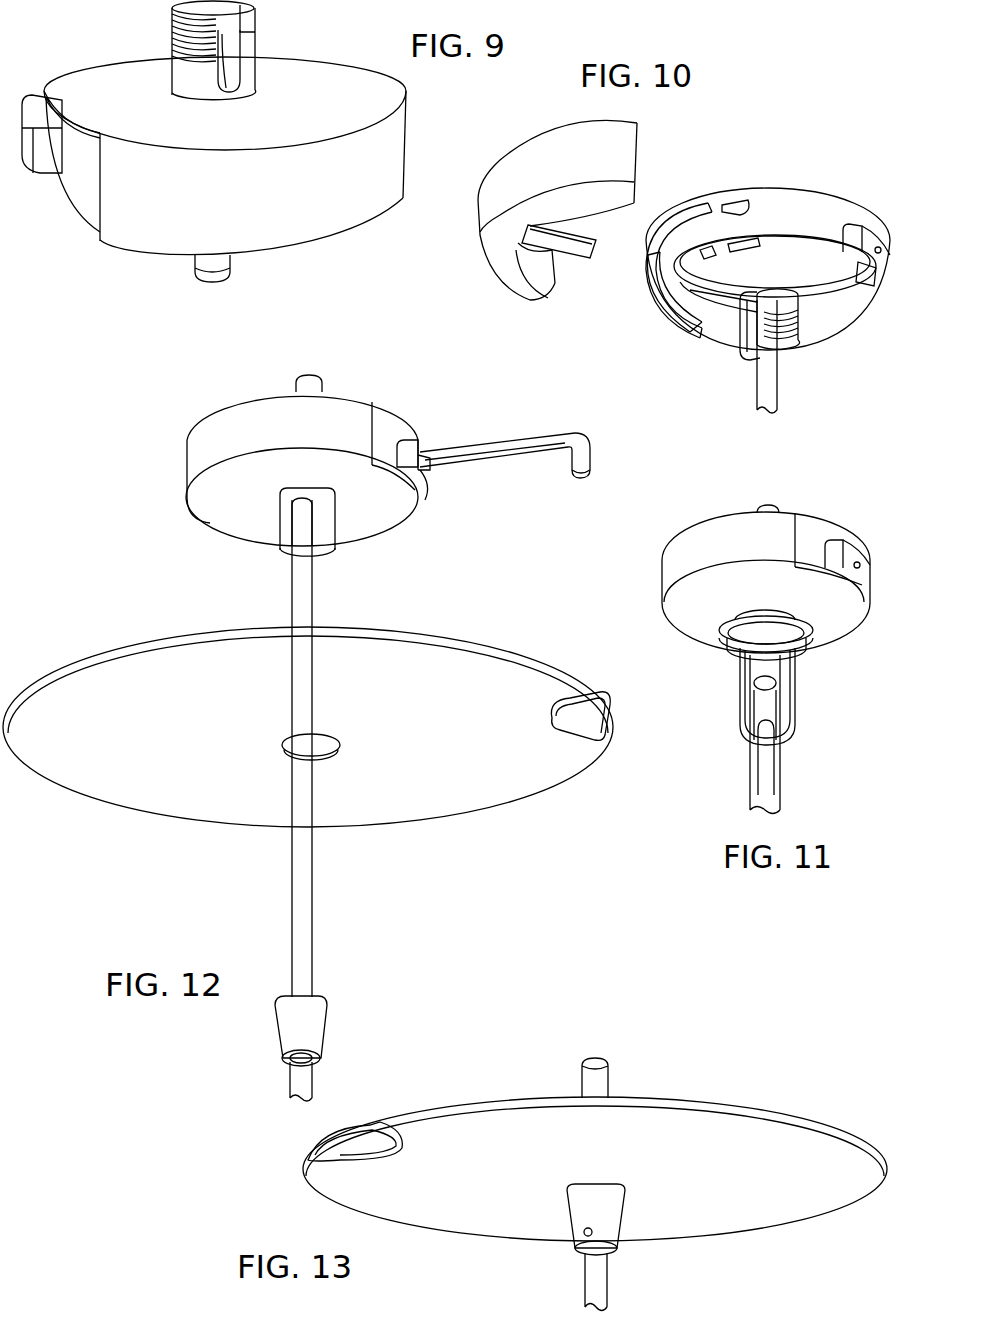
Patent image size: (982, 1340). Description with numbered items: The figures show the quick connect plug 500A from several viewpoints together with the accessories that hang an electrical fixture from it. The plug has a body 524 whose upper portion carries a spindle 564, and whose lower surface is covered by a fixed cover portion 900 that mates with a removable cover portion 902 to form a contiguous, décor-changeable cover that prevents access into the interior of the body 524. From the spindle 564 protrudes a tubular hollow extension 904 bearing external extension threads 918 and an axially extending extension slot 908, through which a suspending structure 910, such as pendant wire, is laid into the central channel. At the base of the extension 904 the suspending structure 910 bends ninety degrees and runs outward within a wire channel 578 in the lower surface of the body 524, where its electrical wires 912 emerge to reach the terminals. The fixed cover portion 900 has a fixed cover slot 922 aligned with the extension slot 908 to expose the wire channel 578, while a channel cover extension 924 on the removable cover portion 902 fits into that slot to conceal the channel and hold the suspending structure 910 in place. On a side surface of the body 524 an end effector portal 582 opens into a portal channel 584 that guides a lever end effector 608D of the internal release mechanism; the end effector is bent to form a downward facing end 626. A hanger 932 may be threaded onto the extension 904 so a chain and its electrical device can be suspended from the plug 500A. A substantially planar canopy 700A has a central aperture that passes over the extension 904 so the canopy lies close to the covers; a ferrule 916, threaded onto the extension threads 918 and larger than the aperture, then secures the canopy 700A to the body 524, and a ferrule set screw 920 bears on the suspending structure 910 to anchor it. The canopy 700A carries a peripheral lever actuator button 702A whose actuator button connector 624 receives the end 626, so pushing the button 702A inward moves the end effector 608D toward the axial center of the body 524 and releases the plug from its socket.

In FIG. 9, the plug 500A is at (118, 272).
In FIG. 10, the plug 500A is at (785, 150).
In FIG. 12, the plug 500A is at (162, 470).
In FIG. 9, the fixed cover portion 900 is at (92, 78).
In FIG. 10, the fixed cover portion 900 is at (812, 338).
In FIG. 9, the hollow extension 904 is at (270, 13).
In FIG. 12, the hollow extension 904 is at (345, 556).
In FIG. 9, the extension threads 918 is at (162, 22).
In FIG. 9, the extension slot 908 is at (258, 48).
In FIG. 9, the end effector portal 582 is at (38, 185).
In FIG. 10, the end effector portal 582 is at (862, 205).
In FIG. 12, the end effector portal 582 is at (422, 440).
In FIG. 11, the end effector portal 582 is at (845, 530).
In FIG. 9, the spindle 564 is at (232, 262).
In FIG. 13, the spindle 564 is at (605, 1080).
In FIG. 10, the removable cover portion 902 is at (533, 143).
In FIG. 10, the channel cover extension 924 is at (575, 268).
In FIG. 10, the electrical wires 912 is at (675, 198).
In FIG. 10, the portal channel 584 is at (866, 282).
In FIG. 10, the wire channel 578 is at (672, 320).
In FIG. 10, the fixed cover slot 922 is at (670, 330).
In FIG. 12, the fixed cover slot 922 is at (348, 755).
In FIG. 10, the suspending structure 910 is at (765, 372).
In FIG. 12, the suspending structure 910 is at (303, 890).
In FIG. 11, the suspending structure 910 is at (765, 710).
In FIG. 13, the suspending structure 910 is at (588, 1272).
In FIG. 12, the end effector end 626 is at (570, 432).
In FIG. 12, the lever end effector 608D is at (512, 458).
In FIG. 12, the actuator button connector 624 is at (565, 652).
In FIG. 12, the canopy 700A is at (488, 797).
In FIG. 13, the canopy 700A is at (700, 1120).
In FIG. 12, the lever actuator button 702A is at (578, 752).
In FIG. 13, the lever actuator button 702A is at (410, 1126).
In FIG. 12, the ferrule 916 is at (282, 1042).
In FIG. 13, the ferrule 916 is at (620, 1247).
In FIG. 11, the body 524 is at (730, 527).
In FIG. 11, the hanger 932 is at (812, 685).
In FIG. 13, the ferrule set screw 920 is at (565, 1232).